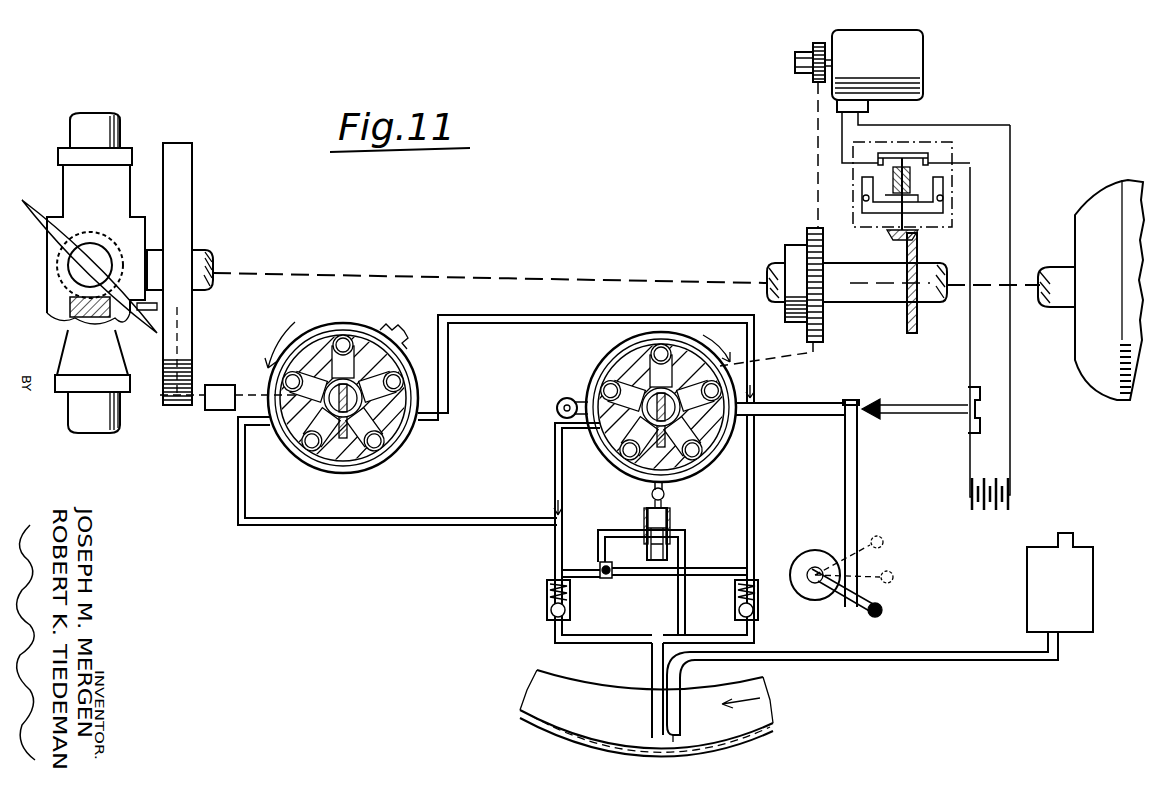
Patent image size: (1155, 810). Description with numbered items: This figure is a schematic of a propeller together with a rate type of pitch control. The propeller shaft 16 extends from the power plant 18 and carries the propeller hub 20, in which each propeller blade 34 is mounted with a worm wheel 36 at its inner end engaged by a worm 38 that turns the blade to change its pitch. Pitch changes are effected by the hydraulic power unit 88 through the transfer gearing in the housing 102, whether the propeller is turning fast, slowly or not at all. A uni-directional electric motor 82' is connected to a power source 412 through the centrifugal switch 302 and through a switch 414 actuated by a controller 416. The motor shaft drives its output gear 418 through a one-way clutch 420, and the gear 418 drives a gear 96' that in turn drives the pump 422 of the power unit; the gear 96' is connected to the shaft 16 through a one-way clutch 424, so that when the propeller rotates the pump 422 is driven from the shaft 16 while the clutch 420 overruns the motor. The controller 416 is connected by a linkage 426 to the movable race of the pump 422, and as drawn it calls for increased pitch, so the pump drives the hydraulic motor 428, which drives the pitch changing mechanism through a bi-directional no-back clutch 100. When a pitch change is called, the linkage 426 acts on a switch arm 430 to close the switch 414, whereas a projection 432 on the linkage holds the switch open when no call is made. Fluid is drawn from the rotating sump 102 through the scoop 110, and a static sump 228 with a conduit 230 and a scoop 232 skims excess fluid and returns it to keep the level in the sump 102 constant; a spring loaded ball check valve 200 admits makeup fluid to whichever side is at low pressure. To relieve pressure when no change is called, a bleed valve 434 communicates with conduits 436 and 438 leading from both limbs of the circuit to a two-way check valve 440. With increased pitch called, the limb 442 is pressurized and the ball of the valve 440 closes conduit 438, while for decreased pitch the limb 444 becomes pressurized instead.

The propeller shaft 16 is at (215, 250).
The power plant 18 is at (1108, 197).
The propeller hub 20 is at (72, 178).
The propeller blade 34 is at (34, 183).
The worm wheel 36 is at (57, 272).
The worm 38 is at (74, 318).
The uni-directional electric motor 82' is at (921, 96).
The hydraulic power unit 88 is at (540, 430).
The gear 96' is at (818, 297).
The bi-directional no-back clutch 100 is at (238, 368).
The rotating sump 102 is at (185, 405).
The fluid pickup scoop 110 is at (652, 682).
The spring loaded ball check valve 200 is at (553, 620).
The static sump 228 is at (1100, 547).
The conduit 230 is at (944, 661).
The scoop 232 is at (673, 700).
The centrifugal switch 302 is at (950, 143).
The power source 412 is at (1010, 492).
The switch 414 is at (968, 390).
The controller 416 is at (828, 555).
The output gear 418 is at (818, 43).
The one-way clutch 420 is at (795, 62).
The pump 422 is at (612, 378).
The one-way clutch 424 is at (798, 245).
The linkage 426 is at (810, 418).
The hydraulic motor 428 is at (388, 465).
The switch arm 430 is at (960, 412).
The projection 432 is at (862, 412).
The bleed valve 434 is at (690, 528).
The conduit 436 is at (598, 578).
The conduit 438 is at (678, 570).
The two-way check valve 440 is at (600, 560).
The limb 442 is at (426, 528).
The limb 444 is at (650, 316).